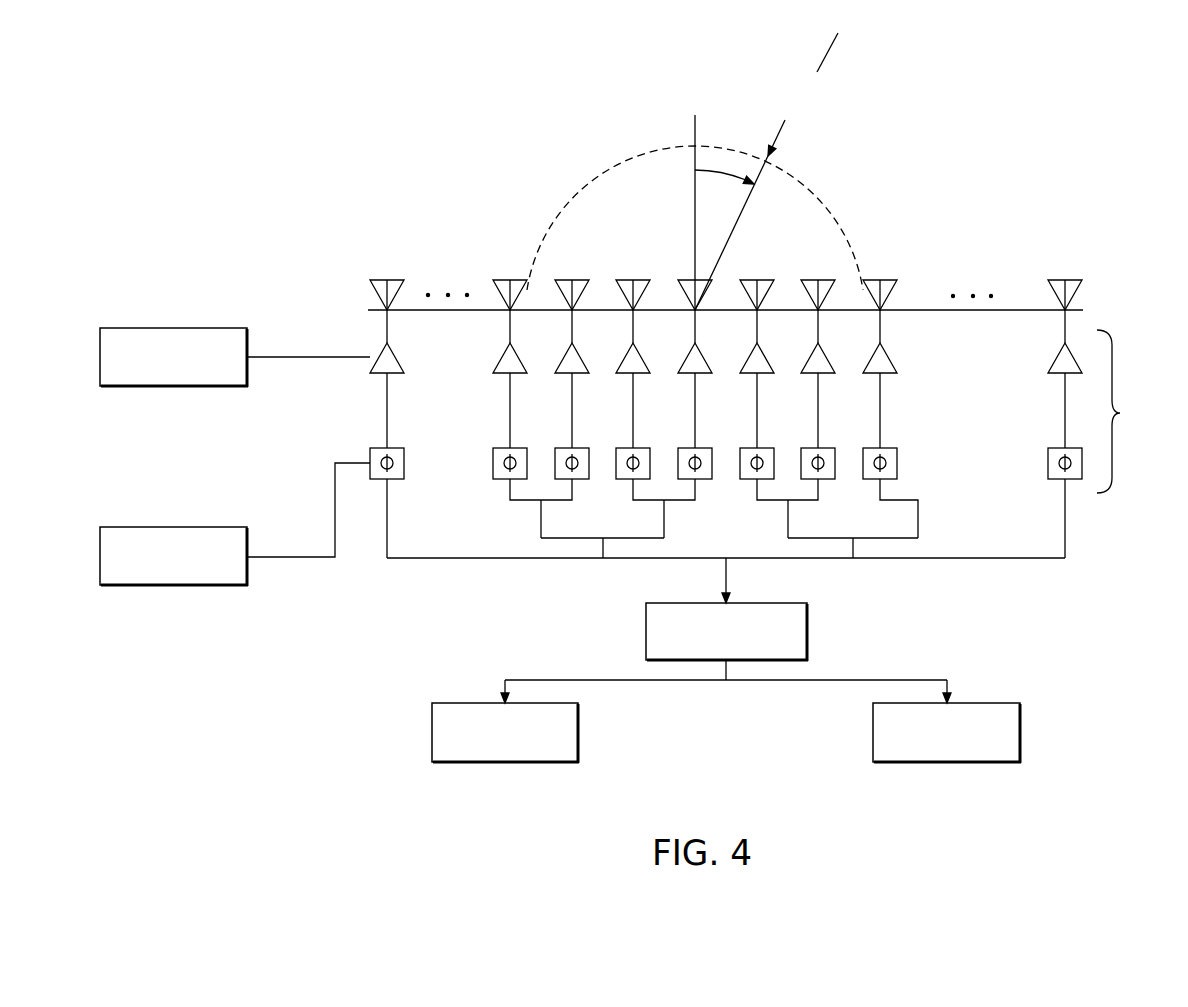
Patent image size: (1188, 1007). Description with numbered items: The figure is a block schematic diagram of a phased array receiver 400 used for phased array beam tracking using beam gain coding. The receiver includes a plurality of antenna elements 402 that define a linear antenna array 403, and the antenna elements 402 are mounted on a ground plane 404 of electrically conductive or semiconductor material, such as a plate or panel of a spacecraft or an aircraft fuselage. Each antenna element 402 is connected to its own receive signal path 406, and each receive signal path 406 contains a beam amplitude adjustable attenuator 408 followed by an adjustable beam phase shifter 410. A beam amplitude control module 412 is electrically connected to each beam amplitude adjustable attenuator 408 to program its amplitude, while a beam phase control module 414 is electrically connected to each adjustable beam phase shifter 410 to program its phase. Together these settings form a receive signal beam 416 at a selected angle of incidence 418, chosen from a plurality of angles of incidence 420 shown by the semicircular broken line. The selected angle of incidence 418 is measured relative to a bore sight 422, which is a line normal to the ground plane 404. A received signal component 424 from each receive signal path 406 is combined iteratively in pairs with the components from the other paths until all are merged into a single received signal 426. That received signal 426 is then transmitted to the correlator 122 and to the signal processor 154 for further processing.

The phased array receiver 400 is at (637, 398).
The antenna element 402 is at (392, 280).
The antenna array 403 is at (630, 272).
The ground plane 404 is at (1083, 310).
The receive signal path 406 is at (1135, 411).
The beam amplitude adjustable attenuator 408 is at (405, 352).
The adjustable beam phase shifter 410 is at (404, 465).
The beam amplitude control module 412 is at (165, 328).
The beam phase control module 414 is at (165, 527).
The receive signal beam 416 is at (813, 171).
The selected angle of incidence 418 is at (721, 162).
The plurality of angles of incidence 420 is at (717, 210).
The bore sight 422 is at (695, 212).
The received signal component 424 is at (387, 531).
The received signal 426 is at (646, 633).
The correlator 122 is at (432, 733).
The signal processor 154 is at (1020, 732).